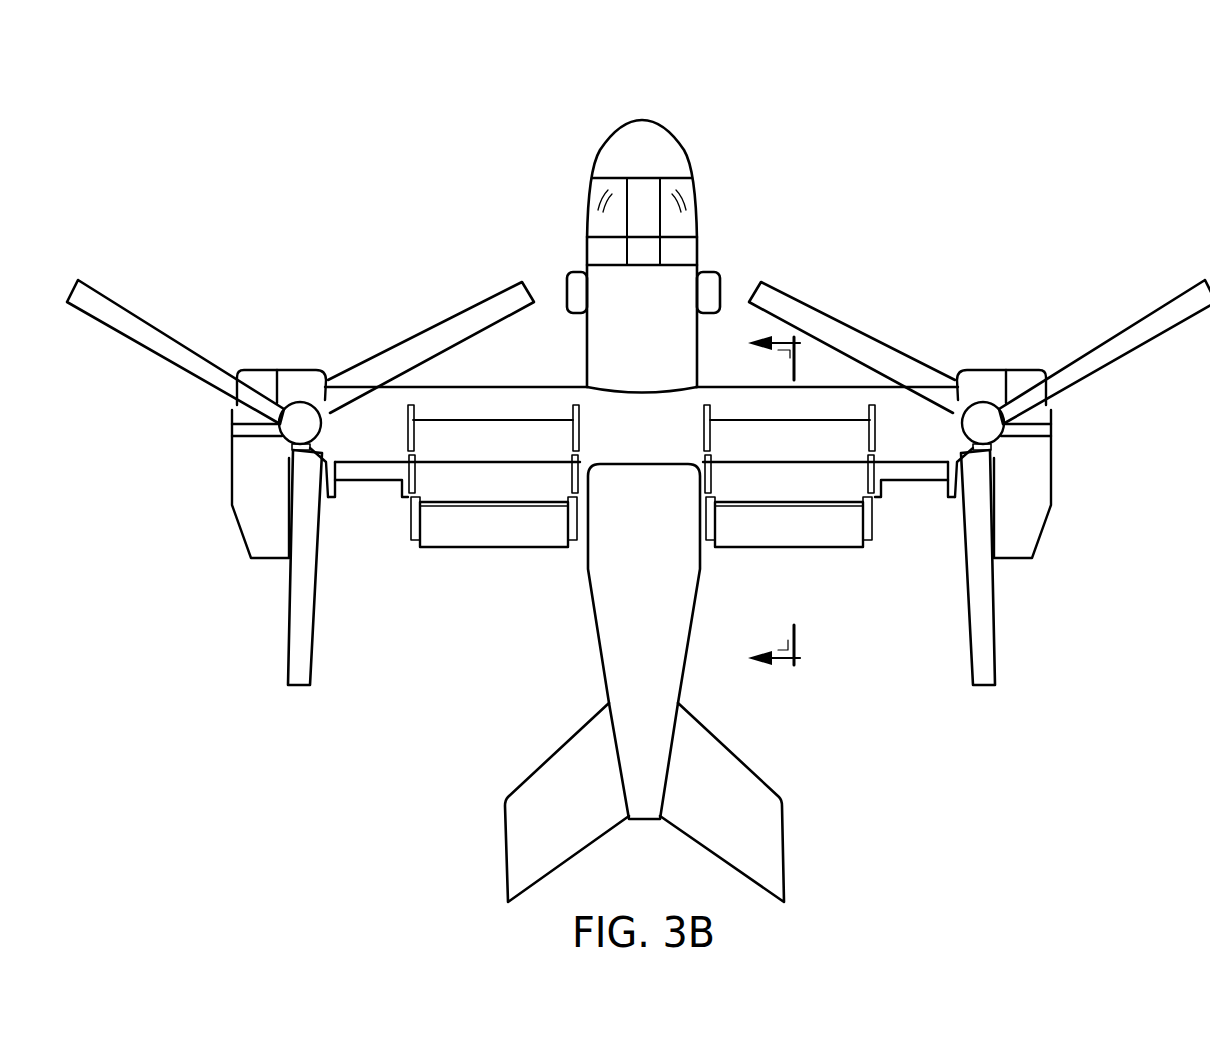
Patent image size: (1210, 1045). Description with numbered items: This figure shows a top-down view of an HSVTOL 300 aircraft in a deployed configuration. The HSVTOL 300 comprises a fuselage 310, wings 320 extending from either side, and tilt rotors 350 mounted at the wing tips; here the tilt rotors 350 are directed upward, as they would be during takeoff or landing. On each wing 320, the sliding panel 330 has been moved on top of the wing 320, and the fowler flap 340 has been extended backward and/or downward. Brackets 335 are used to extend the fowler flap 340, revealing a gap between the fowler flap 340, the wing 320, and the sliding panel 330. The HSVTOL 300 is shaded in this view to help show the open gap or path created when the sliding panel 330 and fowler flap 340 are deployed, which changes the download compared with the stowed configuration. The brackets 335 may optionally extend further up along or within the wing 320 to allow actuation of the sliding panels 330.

The HSVTOL 300 is at (266, 84).
The fuselage 310 is at (640, 120).
The wings 320 is at (445, 387).
The sliding panel 330 is at (528, 430).
The brackets 335 is at (415, 533).
The fowler flap 340 is at (493, 548).
The tilt rotors 350 is at (290, 636).